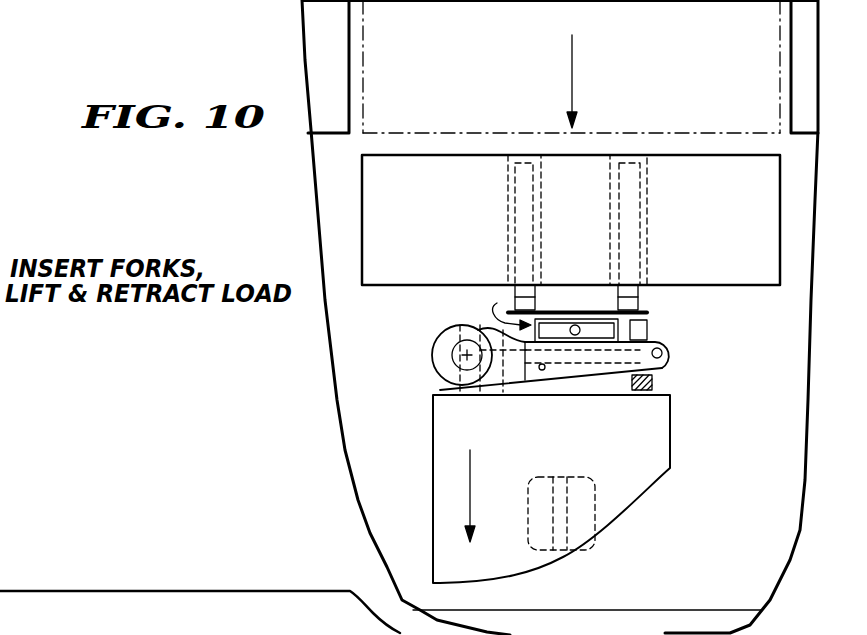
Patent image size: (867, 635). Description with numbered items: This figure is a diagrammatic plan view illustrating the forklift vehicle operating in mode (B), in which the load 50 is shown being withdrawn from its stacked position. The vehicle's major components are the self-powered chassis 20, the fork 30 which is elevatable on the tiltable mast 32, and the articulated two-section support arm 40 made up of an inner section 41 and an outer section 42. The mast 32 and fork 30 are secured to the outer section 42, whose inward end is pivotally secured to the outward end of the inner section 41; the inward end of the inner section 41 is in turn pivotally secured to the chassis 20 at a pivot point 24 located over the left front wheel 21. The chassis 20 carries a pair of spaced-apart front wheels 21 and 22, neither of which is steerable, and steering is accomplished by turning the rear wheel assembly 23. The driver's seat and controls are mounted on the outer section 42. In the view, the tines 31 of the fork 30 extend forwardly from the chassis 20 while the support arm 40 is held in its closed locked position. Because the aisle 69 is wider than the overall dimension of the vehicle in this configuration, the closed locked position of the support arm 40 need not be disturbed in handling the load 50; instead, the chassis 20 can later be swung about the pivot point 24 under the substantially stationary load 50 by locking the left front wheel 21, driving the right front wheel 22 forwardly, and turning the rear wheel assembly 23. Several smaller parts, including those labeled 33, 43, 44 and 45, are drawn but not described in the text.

The chassis 20 is at (650, 471).
The left front wheel 21 is at (463, 323).
The right front wheel 22 is at (647, 330).
The rear wheel assembly 23 is at (563, 470).
The pivot point 24 is at (460, 353).
The fork 30 is at (588, 308).
The tines 31 is at (622, 213).
The mast 32 is at (498, 308).
The pin 33 is at (580, 327).
The articulated two-section support arm 40 is at (428, 392).
The inner section 41 is at (517, 378).
The outer section 42 is at (600, 362).
The pin 43 is at (544, 372).
The pivot 44 is at (666, 353).
The shaft 45 is at (469, 372).
The load 50 is at (333, 62).
The aisle 69 is at (758, 437).